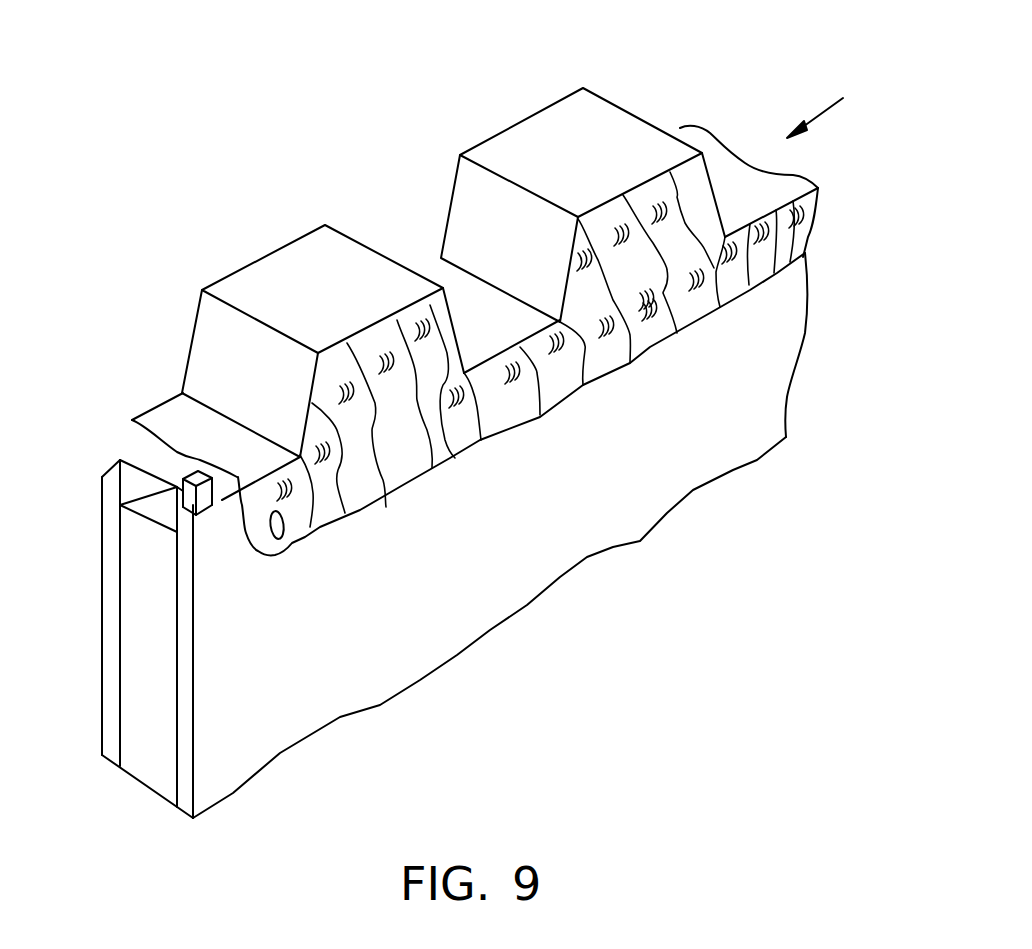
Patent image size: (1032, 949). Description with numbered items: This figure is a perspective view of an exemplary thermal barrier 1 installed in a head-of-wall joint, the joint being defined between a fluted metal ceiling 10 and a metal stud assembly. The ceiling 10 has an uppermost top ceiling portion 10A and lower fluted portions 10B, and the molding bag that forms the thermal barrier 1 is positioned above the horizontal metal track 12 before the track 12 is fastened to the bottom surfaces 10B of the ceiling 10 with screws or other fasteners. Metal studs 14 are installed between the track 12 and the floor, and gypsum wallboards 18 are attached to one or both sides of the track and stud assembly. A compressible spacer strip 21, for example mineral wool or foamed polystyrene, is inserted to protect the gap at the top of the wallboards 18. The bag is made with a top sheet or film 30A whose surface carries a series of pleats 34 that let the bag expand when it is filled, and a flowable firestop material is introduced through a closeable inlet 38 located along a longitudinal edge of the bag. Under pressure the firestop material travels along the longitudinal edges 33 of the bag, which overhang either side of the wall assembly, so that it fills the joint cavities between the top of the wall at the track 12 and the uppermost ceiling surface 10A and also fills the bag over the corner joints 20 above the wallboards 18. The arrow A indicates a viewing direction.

The thermal barrier 1 is at (590, 415).
The fluted metal ceiling 10 is at (453, 237).
The top ceiling portion 10A is at (287, 272).
The fluted portions 10B is at (437, 270).
The horizontal metal track 12 is at (150, 464).
The metal studs 14 is at (155, 767).
The gypsum wallboards 18 is at (110, 603).
The corner joints 20 is at (108, 463).
The spacer strip 21 is at (225, 493).
The top sheet or film 30A is at (500, 412).
The longitudinal edges of the bag 33 is at (818, 220).
The pleats 34 is at (638, 340).
The closeable inlet 38 is at (280, 539).
The viewing direction A is at (830, 107).